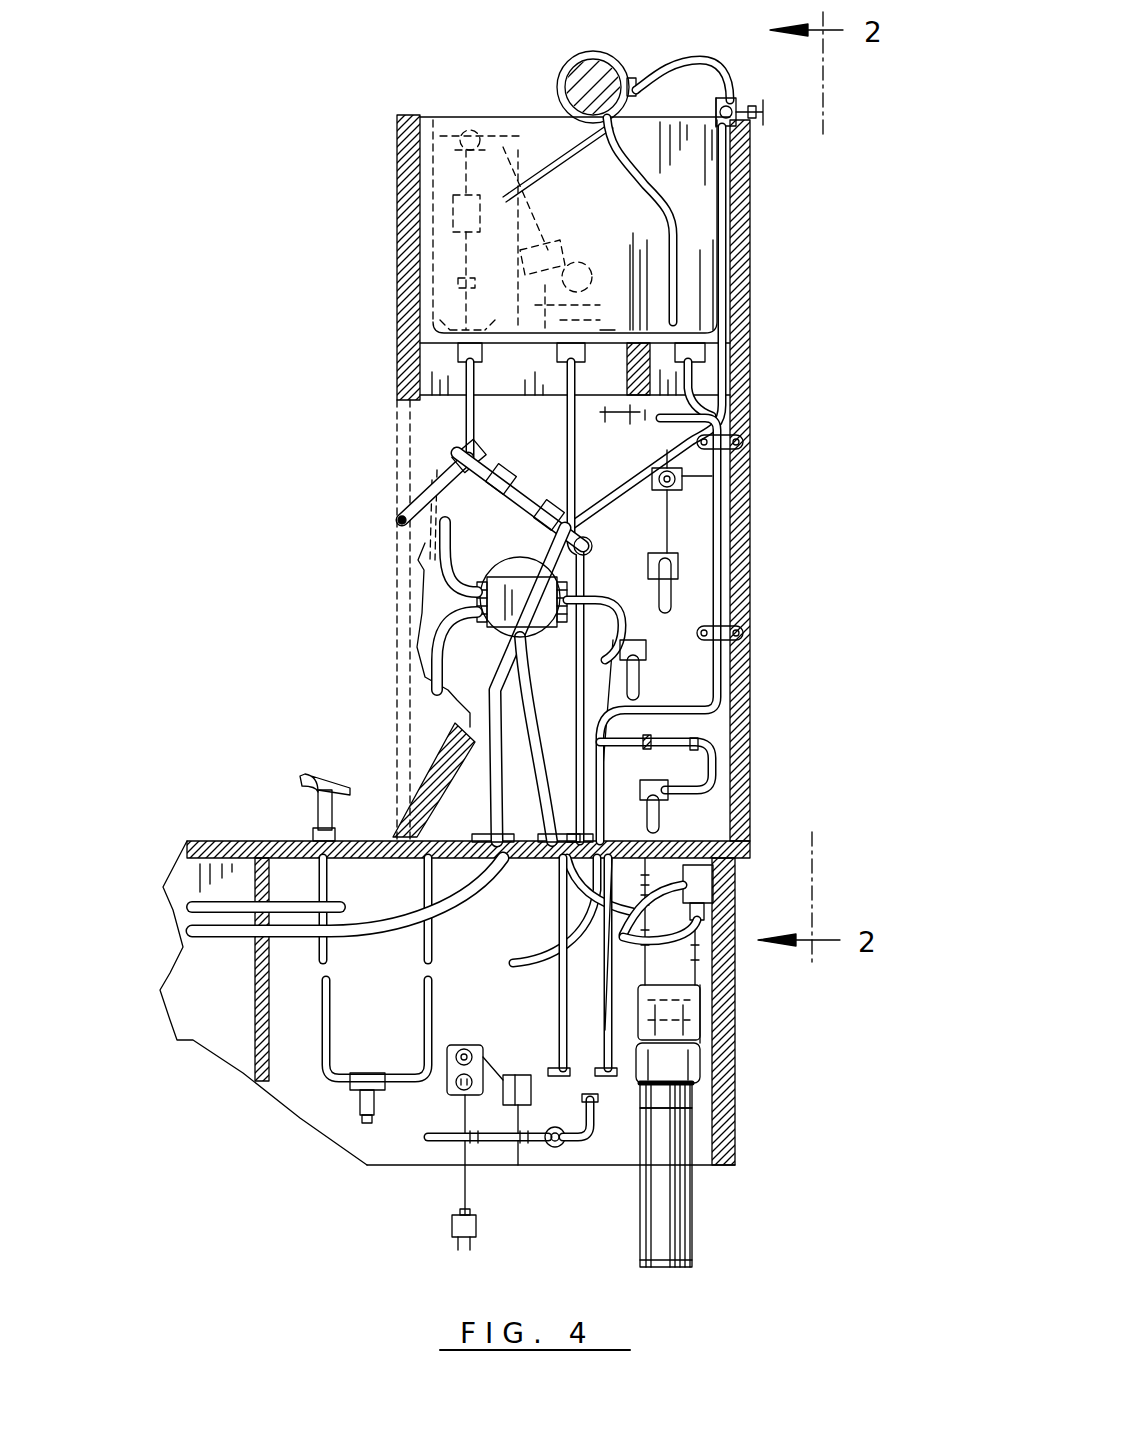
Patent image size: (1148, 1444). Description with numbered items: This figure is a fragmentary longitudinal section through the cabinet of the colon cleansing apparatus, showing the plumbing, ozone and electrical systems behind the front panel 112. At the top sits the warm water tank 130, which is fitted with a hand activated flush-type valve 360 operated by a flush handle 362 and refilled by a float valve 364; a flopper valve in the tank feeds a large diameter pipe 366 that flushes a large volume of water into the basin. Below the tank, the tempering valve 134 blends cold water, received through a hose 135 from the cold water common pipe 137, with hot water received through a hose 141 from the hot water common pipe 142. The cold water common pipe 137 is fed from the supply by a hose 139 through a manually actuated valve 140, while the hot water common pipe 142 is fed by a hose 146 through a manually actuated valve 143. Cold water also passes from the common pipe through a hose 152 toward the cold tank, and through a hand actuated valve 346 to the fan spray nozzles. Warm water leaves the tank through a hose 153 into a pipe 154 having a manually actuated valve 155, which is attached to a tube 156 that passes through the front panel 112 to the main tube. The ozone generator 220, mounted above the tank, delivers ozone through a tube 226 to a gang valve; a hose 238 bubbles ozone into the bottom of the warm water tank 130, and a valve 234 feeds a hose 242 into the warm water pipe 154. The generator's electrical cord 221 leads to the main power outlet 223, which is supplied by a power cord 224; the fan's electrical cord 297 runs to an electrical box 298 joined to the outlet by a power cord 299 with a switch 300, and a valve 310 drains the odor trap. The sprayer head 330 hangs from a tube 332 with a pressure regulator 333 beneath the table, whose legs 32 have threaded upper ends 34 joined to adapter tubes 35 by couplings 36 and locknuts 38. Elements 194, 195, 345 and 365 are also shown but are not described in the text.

The leg 32 is at (672, 1213).
The threaded upper end 34 is at (668, 1095).
The threaded adapter tube 35 is at (680, 975).
The threaded coupling 36 is at (700, 1025).
The locknut 38 is at (700, 1060).
The front panel 112 is at (395, 292).
The warm water tank 130 is at (700, 215).
The tempering valve 134 is at (500, 607).
The hose 135 is at (740, 630).
The cold water common pipe 137 is at (720, 540).
The hose 139 is at (565, 990).
The manually actuated valve 140 is at (700, 695).
The hose 141 is at (560, 690).
The hot water common pipe 142 is at (712, 767).
The manually actuated valve 143 is at (660, 810).
The hose 146 is at (603, 1013).
The hose 152 is at (470, 400).
The hose 153 is at (706, 382).
The pipe 154 is at (520, 482).
The manually actuated valve 155 is at (425, 560).
The tube 156 is at (440, 497).
The conduit 194 is at (545, 955).
The valve handle 195 is at (672, 595).
The ozone generator 220 is at (600, 55).
The electrical cord 221 is at (730, 283).
The main power outlet 223 is at (450, 1065).
The power cord 224 is at (462, 1205).
The tube 226 is at (728, 92).
The valve 234 is at (762, 118).
The hose 238 is at (707, 60).
The hose 242 is at (722, 192).
The electrical cord 297 is at (672, 936).
The electrical box 298 is at (714, 887).
The power cord 299 is at (556, 1147).
The manually actuated electrical switch 300 is at (518, 1105).
The valve 310 is at (572, 1140).
The hand actuated valved sprayer head 330 is at (298, 775).
The tube 332 is at (324, 883).
The pressure regulator 333 is at (365, 1108).
The bracket 345 is at (742, 450).
The hand actuated valve 346 is at (700, 485).
The flush-type valve 360 is at (432, 212).
The flush handle 362 is at (460, 130).
The float valve 364 is at (570, 250).
The tank wall 365 is at (728, 315).
The large diameter pipe 366 is at (570, 422).